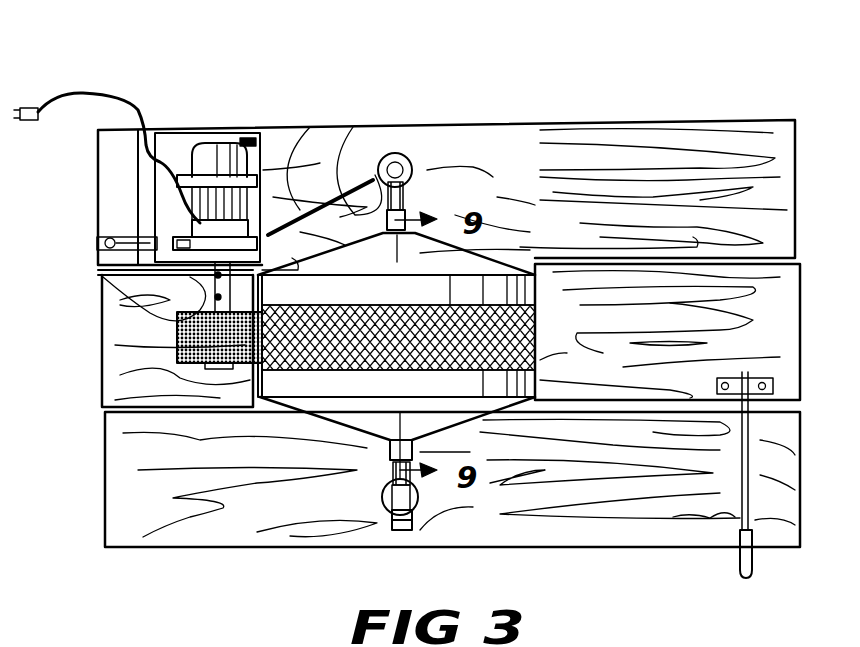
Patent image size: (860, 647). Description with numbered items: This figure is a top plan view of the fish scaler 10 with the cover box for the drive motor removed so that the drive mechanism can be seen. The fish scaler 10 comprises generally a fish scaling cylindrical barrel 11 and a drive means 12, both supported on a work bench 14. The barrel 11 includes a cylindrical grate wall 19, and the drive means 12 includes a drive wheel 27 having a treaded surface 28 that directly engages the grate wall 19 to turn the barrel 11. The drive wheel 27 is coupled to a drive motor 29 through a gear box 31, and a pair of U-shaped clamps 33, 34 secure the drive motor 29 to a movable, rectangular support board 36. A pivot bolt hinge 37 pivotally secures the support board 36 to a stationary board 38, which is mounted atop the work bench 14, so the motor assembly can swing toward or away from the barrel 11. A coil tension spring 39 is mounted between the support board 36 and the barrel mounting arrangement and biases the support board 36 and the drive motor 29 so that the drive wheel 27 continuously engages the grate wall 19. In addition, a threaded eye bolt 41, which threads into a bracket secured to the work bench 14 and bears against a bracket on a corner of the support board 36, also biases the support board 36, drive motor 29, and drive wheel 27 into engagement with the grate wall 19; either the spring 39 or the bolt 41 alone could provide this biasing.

The fish scaler 10 is at (415, 94).
The fish scaling cylindrical barrel 11 is at (432, 252).
The drive means 12 is at (150, 312).
The work bench 14 is at (522, 162).
The cylindrical grate wall 19 is at (537, 340).
The drive wheel 27 is at (182, 370).
The treaded surface 28 is at (176, 338).
The drive motor 29 is at (292, 178).
The gear box 31 is at (200, 225).
The U-shaped clamp 33 is at (102, 273).
The U-shaped clamp 34 is at (267, 177).
The support board 36 is at (178, 143).
The pivot bolt hinge 37 is at (248, 140).
The stationary board 38 is at (148, 187).
The coil tension spring 39 is at (335, 195).
The threaded eye bolt 41 is at (118, 238).